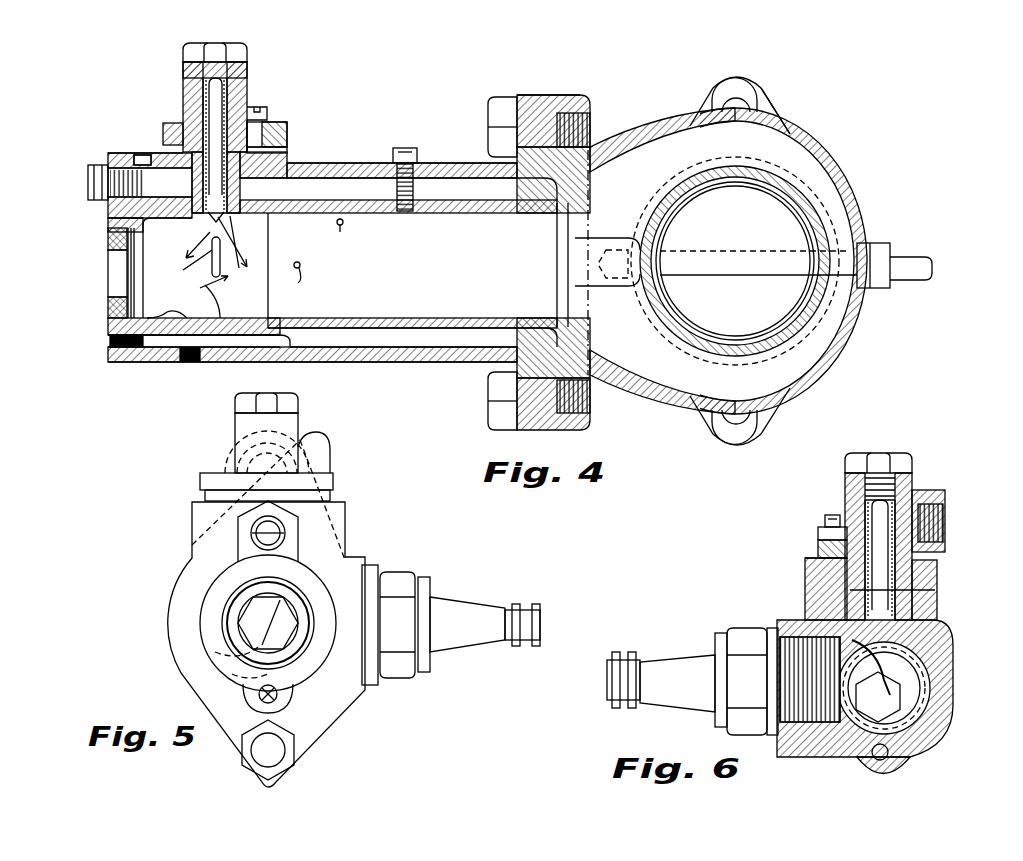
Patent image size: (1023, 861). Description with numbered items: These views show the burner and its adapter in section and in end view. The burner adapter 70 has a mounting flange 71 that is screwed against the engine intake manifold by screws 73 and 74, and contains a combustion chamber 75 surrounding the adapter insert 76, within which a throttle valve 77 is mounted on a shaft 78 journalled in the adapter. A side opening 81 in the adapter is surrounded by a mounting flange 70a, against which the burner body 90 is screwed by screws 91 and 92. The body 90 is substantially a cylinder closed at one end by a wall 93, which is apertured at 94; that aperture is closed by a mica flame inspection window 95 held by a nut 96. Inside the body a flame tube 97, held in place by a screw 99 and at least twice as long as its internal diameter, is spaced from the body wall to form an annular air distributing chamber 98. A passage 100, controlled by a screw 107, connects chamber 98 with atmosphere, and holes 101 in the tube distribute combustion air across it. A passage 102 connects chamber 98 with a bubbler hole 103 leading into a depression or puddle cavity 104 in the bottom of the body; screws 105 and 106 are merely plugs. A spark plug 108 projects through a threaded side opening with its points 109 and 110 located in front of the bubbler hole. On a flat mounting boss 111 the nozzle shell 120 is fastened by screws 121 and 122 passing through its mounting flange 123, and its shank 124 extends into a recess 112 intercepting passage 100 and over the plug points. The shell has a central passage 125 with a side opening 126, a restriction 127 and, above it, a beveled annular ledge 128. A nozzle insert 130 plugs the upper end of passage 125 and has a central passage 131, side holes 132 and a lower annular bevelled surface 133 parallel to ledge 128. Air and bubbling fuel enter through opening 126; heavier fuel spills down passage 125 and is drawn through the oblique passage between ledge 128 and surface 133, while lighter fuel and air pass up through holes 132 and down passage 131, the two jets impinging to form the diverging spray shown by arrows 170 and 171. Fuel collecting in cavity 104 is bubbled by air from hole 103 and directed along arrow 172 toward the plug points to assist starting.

In FIG. 4, the burner adapter 70 is at (852, 184).
In FIG. 4, the mounting flange 70a is at (582, 100).
In FIG. 4, the mounting flange 71 is at (778, 116).
In FIG. 4, the screw 73 is at (748, 98).
In FIG. 4, the screw 74 is at (740, 432).
In FIG. 4, the combustion chamber 75 is at (788, 163).
In FIG. 4, the adapter insert 76 is at (690, 338).
In FIG. 4, the throttle valve 77 is at (686, 205).
In FIG. 4, the shaft 78 is at (755, 272).
In FIG. 4, the side opening 81 is at (572, 240).
In FIG. 4, the burner body 90 is at (450, 165).
In FIG. 5, the burner body 90 is at (200, 584).
In FIG. 4, the screw 91 is at (497, 110).
In FIG. 5, the screw 91 is at (313, 455).
In FIG. 4, the screw 92 is at (500, 400).
In FIG. 5, the screw 92 is at (292, 757).
In FIG. 4, the wall 93 is at (110, 220).
In FIG. 4, the aperture 94 is at (190, 262).
In FIG. 4, the mica flame inspection window 95 is at (165, 266).
In FIG. 5, the mica flame inspection window 95 is at (246, 616).
In FIG. 6, the mica flame inspection window 95 is at (905, 708).
In FIG. 4, the nut 96 is at (110, 242).
In FIG. 5, the nut 96 is at (245, 602).
In FIG. 6, the nut 96 is at (930, 695).
In FIG. 4, the flame tube 97 is at (455, 205).
In FIG. 4, the annular air distributing chamber 98 is at (360, 172).
In FIG. 4, the screw 99 is at (404, 150).
In FIG. 4, the passage 100 is at (144, 158).
In FIG. 4, the holes 101 is at (338, 225).
In FIG. 4, the passage 102 is at (230, 345).
In FIG. 6, the passage 102 is at (890, 753).
In FIG. 4, the bubbler hole 103 is at (165, 362).
In FIG. 4, the puddle cavity 104 is at (183, 315).
In FIG. 4, the screw 105 is at (120, 340).
In FIG. 5, the screw 105 is at (280, 698).
In FIG. 4, the screw 106 is at (220, 350).
In FIG. 4, the screw 107 is at (90, 185).
In FIG. 5, the screw 107 is at (265, 536).
In FIG. 5, the spark plug 108 is at (456, 640).
In FIG. 6, the spark plug 108 is at (680, 698).
In FIG. 4, the plug point 109 is at (214, 298).
In FIG. 5, the plug point 109 is at (232, 674).
In FIG. 6, the plug point 109 is at (881, 676).
In FIG. 4, the plug point 110 is at (206, 280).
In FIG. 5, the plug point 110 is at (215, 652).
In FIG. 6, the plug point 110 is at (870, 674).
In FIG. 4, the flat mounting boss 111 is at (118, 150).
In FIG. 6, the flat mounting boss 111 is at (815, 557).
In FIG. 4, the recess 112 is at (194, 214).
In FIG. 6, the recess 112 is at (855, 586).
In FIG. 4, the nozzle shell 120 is at (185, 118).
In FIG. 5, the nozzle shell 120 is at (225, 437).
In FIG. 6, the nozzle shell 120 is at (845, 487).
In FIG. 4, the screw 121 is at (258, 112).
In FIG. 6, the screw 122 is at (825, 526).
In FIG. 4, the mounting flange 123 is at (282, 134).
In FIG. 5, the mounting flange 123 is at (205, 481).
In FIG. 6, the mounting flange 123 is at (815, 541).
In FIG. 4, the shank 124 is at (285, 158).
In FIG. 5, the shank 124 is at (335, 497).
In FIG. 6, the shank 124 is at (865, 591).
In FIG. 4, the central passage 125 is at (235, 125).
In FIG. 6, the central passage 125 is at (860, 541).
In FIG. 6, the side opening 126 is at (945, 521).
In FIG. 4, the restriction 127 is at (239, 268).
In FIG. 6, the restriction 127 is at (895, 646).
In FIG. 4, the beveled annular ledge 128 is at (270, 200).
In FIG. 6, the beveled annular ledge 128 is at (815, 621).
In FIG. 4, the nozzle insert 130 is at (207, 50).
In FIG. 5, the nozzle insert 130 is at (298, 402).
In FIG. 6, the nozzle insert 130 is at (878, 465).
In FIG. 4, the central passage 131 is at (214, 110).
In FIG. 6, the central passage 131 is at (905, 541).
In FIG. 4, the side holes 132 is at (197, 67).
In FIG. 6, the side holes 132 is at (910, 492).
In FIG. 4, the annular bevelled surface 133 is at (237, 148).
In FIG. 6, the annular bevelled surface 133 is at (910, 576).
In FIG. 4, the arrow 170 is at (205, 250).
In FIG. 4, the arrow 171 is at (222, 212).
In FIG. 4, the arrow 172 is at (210, 292).